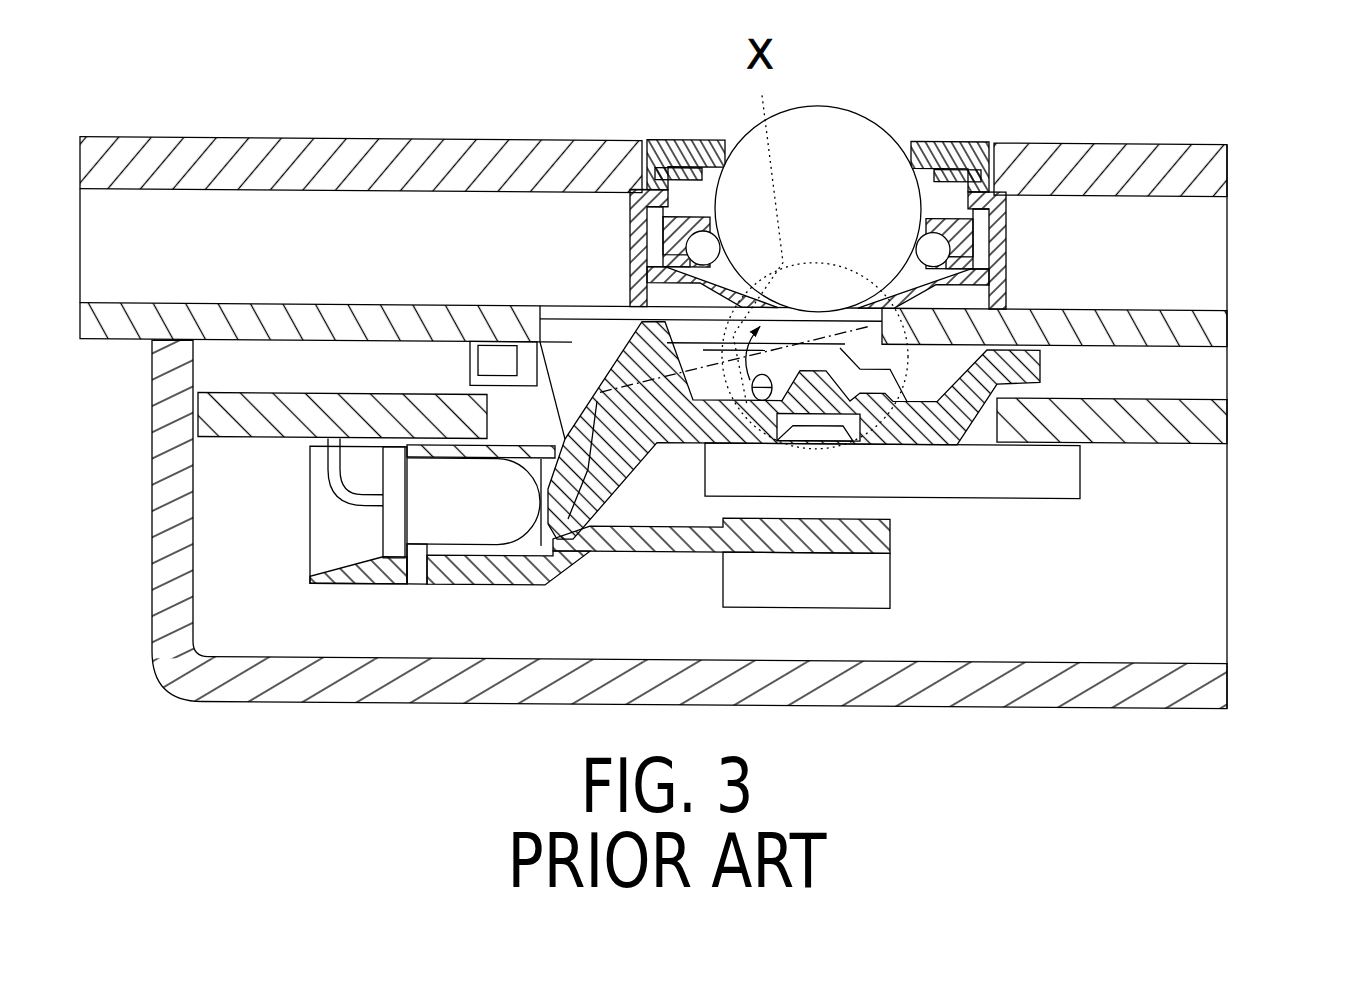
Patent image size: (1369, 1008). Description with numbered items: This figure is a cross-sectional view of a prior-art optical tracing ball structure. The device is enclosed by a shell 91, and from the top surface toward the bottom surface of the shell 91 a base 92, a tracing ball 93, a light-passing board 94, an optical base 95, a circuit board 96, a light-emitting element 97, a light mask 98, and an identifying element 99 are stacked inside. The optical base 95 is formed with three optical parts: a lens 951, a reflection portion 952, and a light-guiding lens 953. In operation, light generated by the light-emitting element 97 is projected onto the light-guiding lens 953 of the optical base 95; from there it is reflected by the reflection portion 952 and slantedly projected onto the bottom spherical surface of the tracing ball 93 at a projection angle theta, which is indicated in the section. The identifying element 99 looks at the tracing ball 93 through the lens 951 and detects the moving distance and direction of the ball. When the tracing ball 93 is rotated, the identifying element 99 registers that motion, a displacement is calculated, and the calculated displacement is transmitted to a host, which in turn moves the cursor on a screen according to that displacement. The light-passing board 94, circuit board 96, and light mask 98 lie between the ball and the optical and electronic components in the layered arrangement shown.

The shell 91 is at (1137, 141).
The base 92 is at (1020, 253).
The tracing ball 93 is at (850, 126).
The light-passing board 94 is at (1220, 326).
The optical base 95 is at (764, 448).
The circuit board 96 is at (1215, 417).
The light-emitting element 97 is at (425, 512).
The light mask 98 is at (475, 578).
The identifying element 99 is at (1045, 485).
The lens 951 is at (917, 440).
The reflection portion 952 is at (640, 468).
The light-guiding lens 953 is at (545, 575).